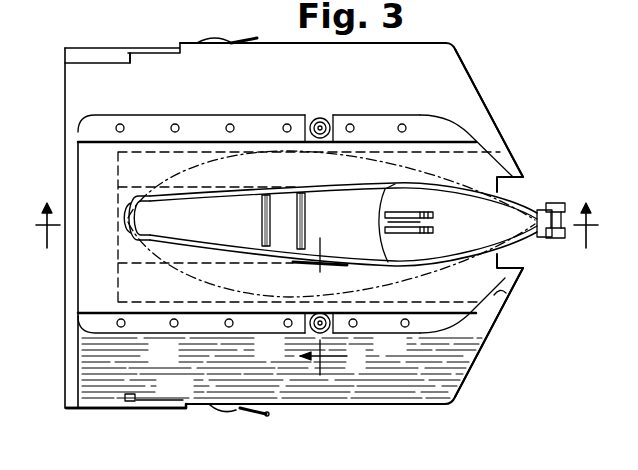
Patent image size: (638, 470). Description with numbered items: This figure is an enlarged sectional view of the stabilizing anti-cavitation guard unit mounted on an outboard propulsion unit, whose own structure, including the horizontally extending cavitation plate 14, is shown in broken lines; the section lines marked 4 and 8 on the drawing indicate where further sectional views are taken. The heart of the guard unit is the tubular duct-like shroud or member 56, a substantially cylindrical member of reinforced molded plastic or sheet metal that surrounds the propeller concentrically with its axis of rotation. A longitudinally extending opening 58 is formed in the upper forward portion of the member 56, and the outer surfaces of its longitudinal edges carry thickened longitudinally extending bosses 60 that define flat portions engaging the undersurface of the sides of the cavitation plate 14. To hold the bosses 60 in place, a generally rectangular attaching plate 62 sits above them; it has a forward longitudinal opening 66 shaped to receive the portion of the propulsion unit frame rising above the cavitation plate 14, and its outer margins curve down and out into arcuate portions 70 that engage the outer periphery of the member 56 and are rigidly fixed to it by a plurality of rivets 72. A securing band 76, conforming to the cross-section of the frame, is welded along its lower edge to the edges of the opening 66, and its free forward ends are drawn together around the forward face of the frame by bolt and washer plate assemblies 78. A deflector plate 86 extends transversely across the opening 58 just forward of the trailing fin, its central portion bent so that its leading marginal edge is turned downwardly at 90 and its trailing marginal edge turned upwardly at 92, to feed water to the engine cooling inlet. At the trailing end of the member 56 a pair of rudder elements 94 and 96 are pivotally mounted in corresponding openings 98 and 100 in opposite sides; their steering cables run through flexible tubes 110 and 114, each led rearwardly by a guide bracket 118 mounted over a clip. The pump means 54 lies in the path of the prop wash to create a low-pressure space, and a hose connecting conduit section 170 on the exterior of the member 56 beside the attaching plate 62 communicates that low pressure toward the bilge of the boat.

The section line 4- 4 is at (317, 236).
The section line 8- 8 is at (327, 306).
The cavitation plate 14 is at (178, 277).
The pump means 54 is at (327, 113).
The tubular duct-like shroud or member 56 is at (70, 93).
The longitudinally extending opening 58 is at (533, 185).
The thickened longitudinally extending bosses 60 is at (510, 156).
The attaching plate 62 is at (78, 167).
The forward longitudinal opening 66 is at (507, 291).
The arcuate portions 70 is at (280, 122).
The rivets 72 is at (176, 124).
The securing band 76 is at (541, 212).
The bolt and washer plate assemblies 78 is at (547, 239).
The deflector plate 86 is at (303, 222).
The leading marginal edge turned downwardly 90 is at (303, 198).
The trailing marginal edge turned upwardly 92 is at (263, 218).
The rudder element 94 is at (90, 54).
The rudder element 96 is at (95, 409).
The opening 98 is at (132, 55).
The opening 100 is at (143, 400).
The flexible tube 110 is at (243, 38).
The flexible tube 114 is at (245, 411).
The guide bracket 118 is at (215, 40).
The hose connecting conduit section 170 is at (330, 123).